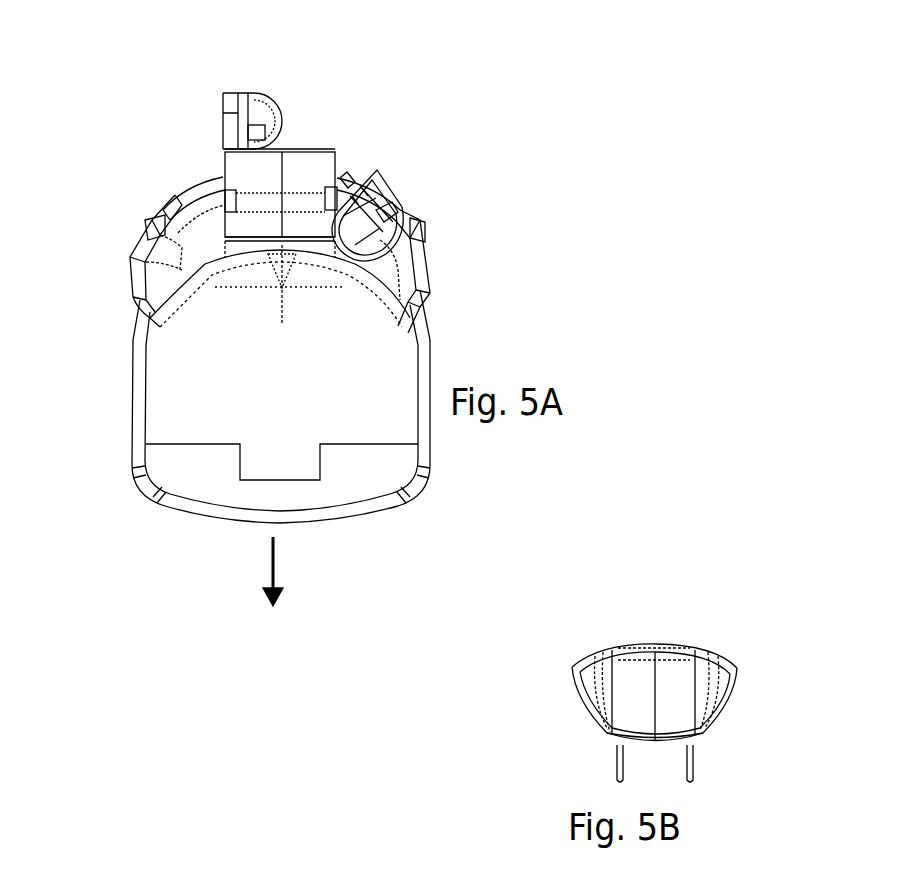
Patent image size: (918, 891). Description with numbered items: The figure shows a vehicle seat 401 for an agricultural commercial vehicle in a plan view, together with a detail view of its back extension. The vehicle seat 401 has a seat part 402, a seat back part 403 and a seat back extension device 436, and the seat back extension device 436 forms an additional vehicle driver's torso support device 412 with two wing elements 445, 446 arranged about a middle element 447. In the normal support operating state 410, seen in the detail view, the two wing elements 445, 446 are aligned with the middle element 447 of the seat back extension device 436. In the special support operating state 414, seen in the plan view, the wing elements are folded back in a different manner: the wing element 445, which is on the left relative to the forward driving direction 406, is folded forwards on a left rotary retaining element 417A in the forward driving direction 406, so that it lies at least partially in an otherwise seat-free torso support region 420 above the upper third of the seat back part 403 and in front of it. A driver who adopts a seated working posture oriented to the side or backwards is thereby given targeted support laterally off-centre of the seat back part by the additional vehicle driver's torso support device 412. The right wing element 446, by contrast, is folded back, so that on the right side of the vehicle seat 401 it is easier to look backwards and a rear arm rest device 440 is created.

In FIG. 5A, the vehicle seat 401 is at (108, 90).
In FIG. 5A, the seat part 402 is at (188, 492).
In FIG. 5A, the seat back part 403 is at (140, 270).
In FIG. 5A, the forward driving direction 406 is at (276, 558).
In FIG. 5B, the normal support operating state 410 is at (651, 603).
In FIG. 5A, the vehicle driver's torso support device 412 is at (425, 203).
In FIG. 5B, the vehicle driver's torso support device 412 is at (742, 731).
In FIG. 5A, the special support operating state 414 is at (492, 227).
In FIG. 5A, the left rotary retaining element 417A is at (347, 183).
In FIG. 5B, the left rotary retaining element 417A is at (691, 762).
In FIG. 5A, the seat-free torso support region 420 is at (402, 252).
In FIG. 5A, the seat back extension device 436 is at (387, 150).
In FIG. 5B, the seat back extension device 436 is at (546, 742).
In FIG. 5A, the rear arm rest device 440 is at (190, 200).
In FIG. 5A, the left wing element 445 is at (380, 190).
In FIG. 5B, the left wing element 445 is at (722, 678).
In FIG. 5A, the right wing element 446 is at (230, 100).
In FIG. 5B, the right wing element 446 is at (588, 678).
In FIG. 5A, the middle element 447 is at (283, 146).
In FIG. 5B, the middle element 447 is at (675, 648).